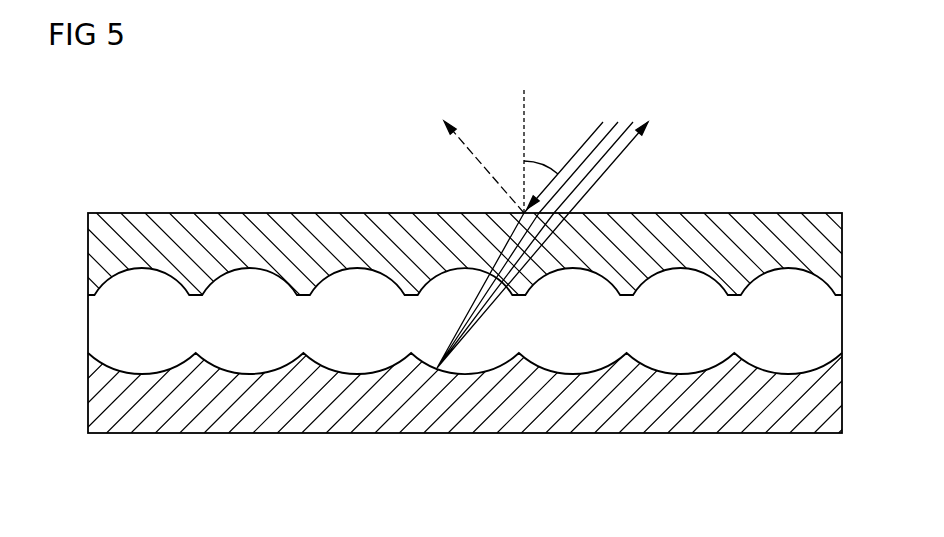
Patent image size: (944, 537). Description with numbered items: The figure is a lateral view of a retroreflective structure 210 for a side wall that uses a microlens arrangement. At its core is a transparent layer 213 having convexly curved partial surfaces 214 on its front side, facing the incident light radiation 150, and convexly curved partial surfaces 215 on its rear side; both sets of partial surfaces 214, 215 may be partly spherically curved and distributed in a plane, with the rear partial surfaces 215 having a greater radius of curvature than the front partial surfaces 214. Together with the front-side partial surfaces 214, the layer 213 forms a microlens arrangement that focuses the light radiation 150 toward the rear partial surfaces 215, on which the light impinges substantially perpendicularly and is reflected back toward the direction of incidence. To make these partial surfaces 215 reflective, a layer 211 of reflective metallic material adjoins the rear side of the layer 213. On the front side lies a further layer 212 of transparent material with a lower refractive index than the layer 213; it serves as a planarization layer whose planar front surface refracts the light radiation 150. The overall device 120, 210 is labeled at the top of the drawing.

The lighting device 120 is at (471, 279).
The retroreflective structure 210 is at (471, 279).
The layer composed of a reflective metallic material 211 is at (270, 420).
The further layer composed of a transparent material 212 is at (192, 217).
The transparent layer 213 is at (465, 324).
The convexly curved partial surfaces 214 is at (327, 270).
The convexly curved partial surfaces 215 is at (368, 375).
The incident light radiation 150 is at (584, 143).